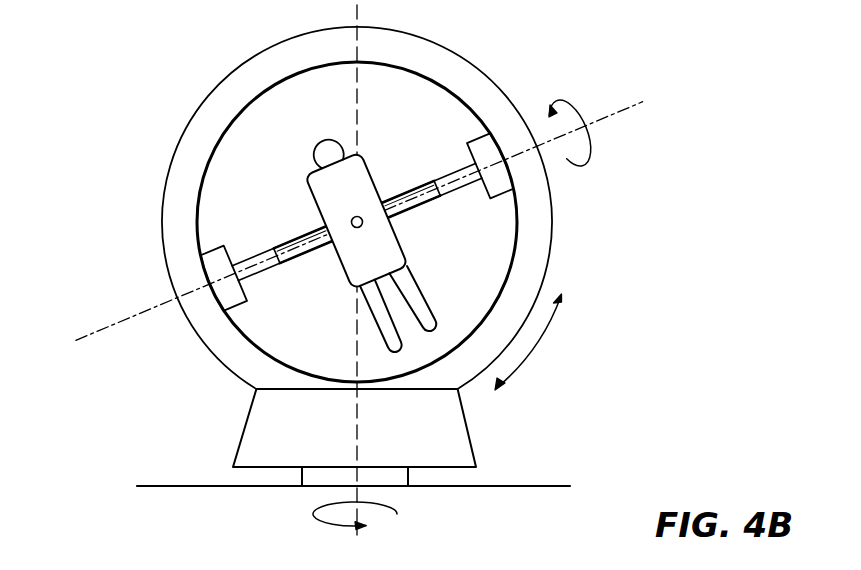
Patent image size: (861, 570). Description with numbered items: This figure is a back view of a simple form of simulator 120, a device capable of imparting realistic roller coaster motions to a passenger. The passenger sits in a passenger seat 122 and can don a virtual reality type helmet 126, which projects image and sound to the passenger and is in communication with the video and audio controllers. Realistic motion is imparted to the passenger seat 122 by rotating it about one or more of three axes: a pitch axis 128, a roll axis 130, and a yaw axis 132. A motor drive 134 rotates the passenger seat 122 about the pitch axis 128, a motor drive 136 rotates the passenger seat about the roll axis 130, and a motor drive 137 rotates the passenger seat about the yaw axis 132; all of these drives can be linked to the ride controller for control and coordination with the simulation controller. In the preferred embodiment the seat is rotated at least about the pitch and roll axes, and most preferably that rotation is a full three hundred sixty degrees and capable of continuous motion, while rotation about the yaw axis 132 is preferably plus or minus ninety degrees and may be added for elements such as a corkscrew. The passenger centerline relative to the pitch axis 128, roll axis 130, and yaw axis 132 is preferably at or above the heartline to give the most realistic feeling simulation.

The simulator 120 is at (192, 97).
The passenger seat 122 is at (400, 245).
The virtual reality type helmet 126 is at (316, 151).
The pitch axis 128 is at (596, 122).
The roll axis 130 is at (361, 215).
The yaw axis 132 is at (358, 430).
The motor drive 134 is at (484, 154).
The motor drive 136 is at (282, 425).
The motor drive 137 is at (318, 476).